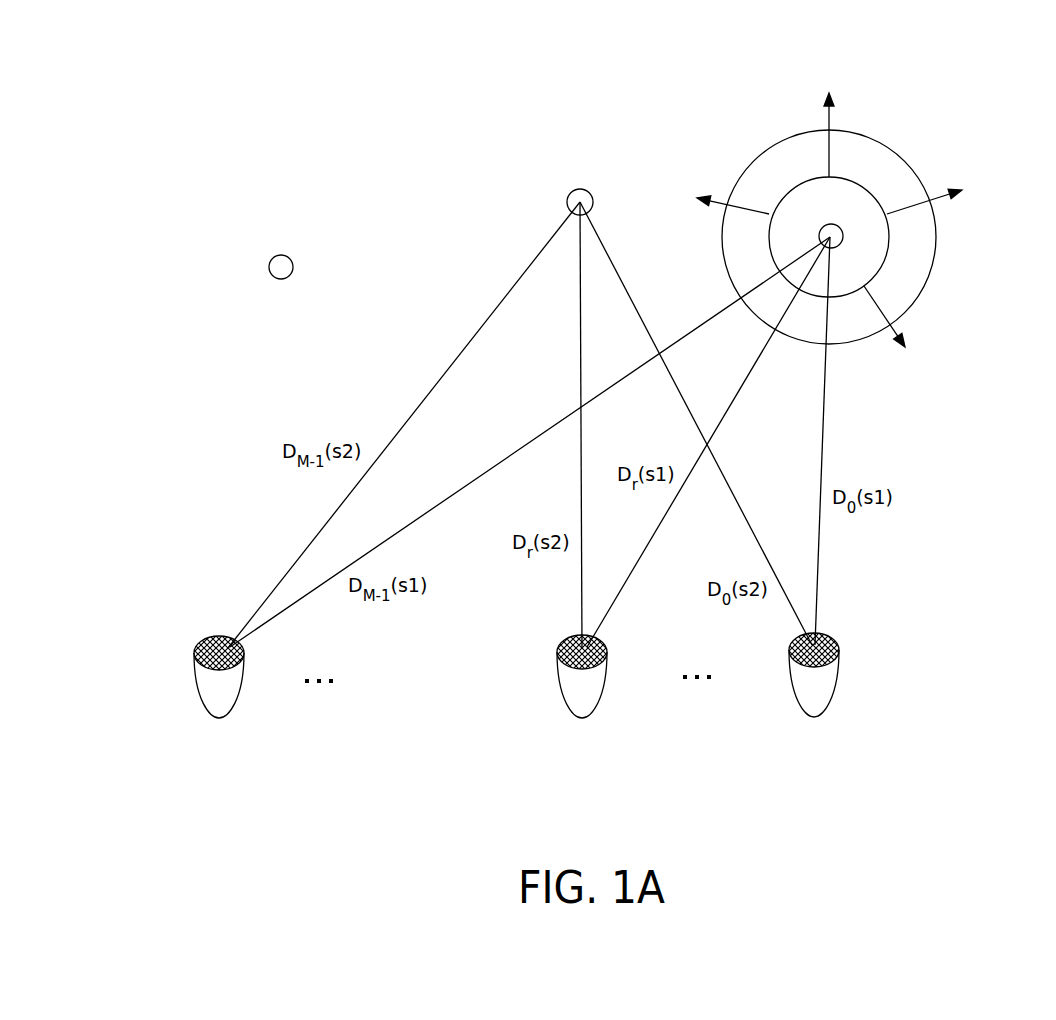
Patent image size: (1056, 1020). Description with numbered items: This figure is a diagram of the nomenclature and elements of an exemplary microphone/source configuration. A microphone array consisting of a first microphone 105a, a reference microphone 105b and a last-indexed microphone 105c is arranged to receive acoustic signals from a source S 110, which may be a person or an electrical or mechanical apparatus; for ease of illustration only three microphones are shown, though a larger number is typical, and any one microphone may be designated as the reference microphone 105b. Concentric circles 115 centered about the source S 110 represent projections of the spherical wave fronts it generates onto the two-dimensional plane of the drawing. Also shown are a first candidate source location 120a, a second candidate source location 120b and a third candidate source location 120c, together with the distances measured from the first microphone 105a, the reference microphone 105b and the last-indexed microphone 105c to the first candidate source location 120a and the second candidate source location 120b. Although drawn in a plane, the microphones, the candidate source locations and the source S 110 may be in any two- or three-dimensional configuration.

The microphone 0 105a is at (840, 673).
The reference microphone 105b is at (648, 650).
The microphone M-1 105c is at (235, 705).
The source S 110 is at (843, 243).
The concentric circles 115 is at (937, 238).
The candidate source location 1 120a is at (893, 117).
The candidate source location 2 120b is at (665, 163).
The candidate source location 3 120c is at (360, 227).